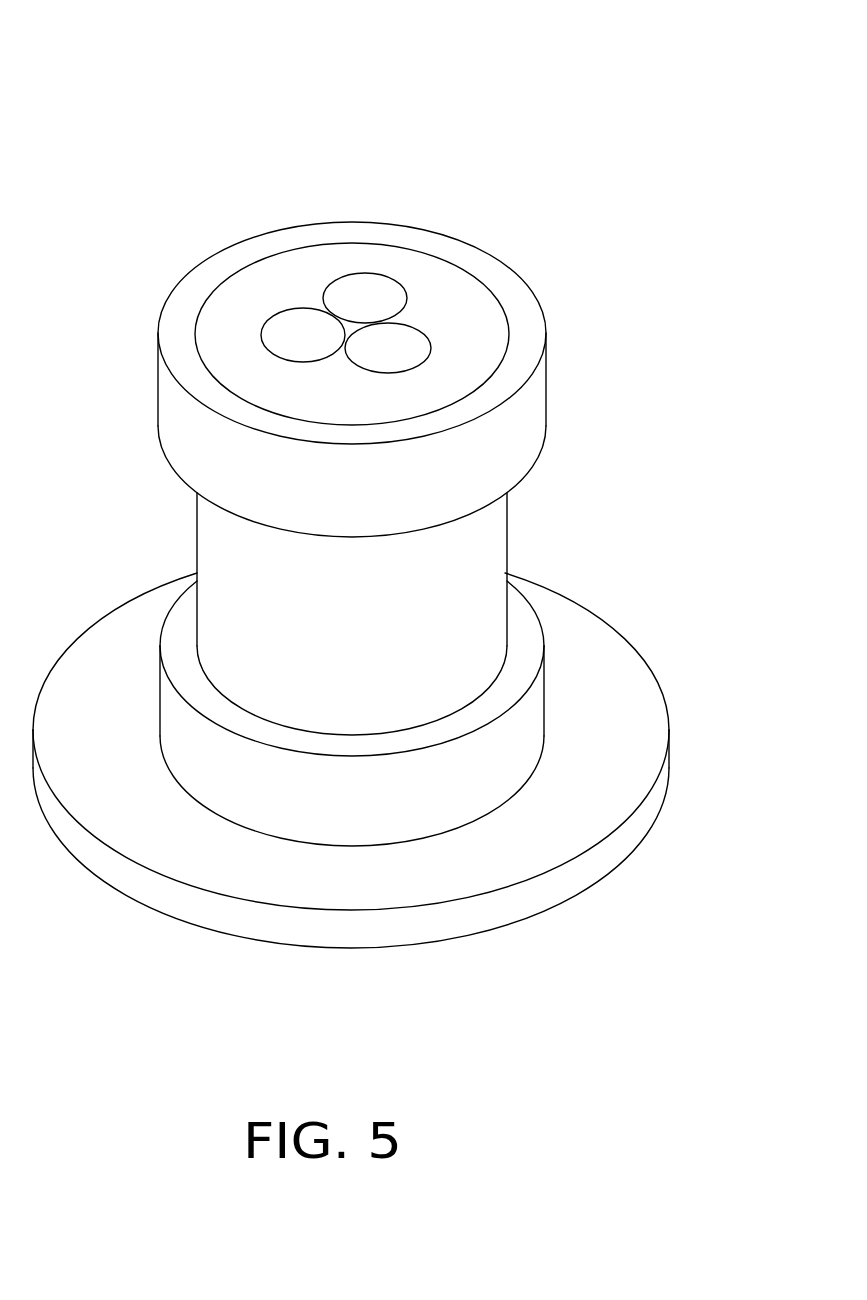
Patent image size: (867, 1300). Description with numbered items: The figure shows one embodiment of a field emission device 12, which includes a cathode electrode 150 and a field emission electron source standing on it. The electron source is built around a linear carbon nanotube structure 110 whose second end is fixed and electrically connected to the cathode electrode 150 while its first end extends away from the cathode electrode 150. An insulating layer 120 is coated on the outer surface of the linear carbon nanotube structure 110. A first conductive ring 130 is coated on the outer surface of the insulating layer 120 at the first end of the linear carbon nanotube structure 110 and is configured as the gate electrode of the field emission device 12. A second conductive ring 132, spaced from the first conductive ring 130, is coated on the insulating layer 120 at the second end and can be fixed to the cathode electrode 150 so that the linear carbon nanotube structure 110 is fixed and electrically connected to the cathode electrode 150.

The field emission device 12 is at (323, 55).
The linear carbon nanotube structure 110 is at (367, 302).
The insulating layer 120 is at (467, 323).
The first conductive ring 130 is at (507, 435).
The second conductive ring 132 is at (447, 787).
The cathode electrode 150 is at (610, 688).